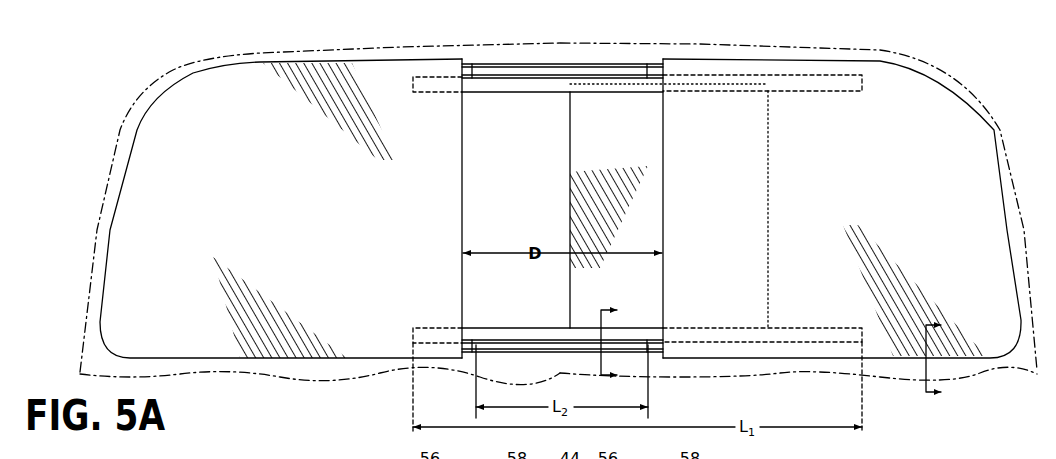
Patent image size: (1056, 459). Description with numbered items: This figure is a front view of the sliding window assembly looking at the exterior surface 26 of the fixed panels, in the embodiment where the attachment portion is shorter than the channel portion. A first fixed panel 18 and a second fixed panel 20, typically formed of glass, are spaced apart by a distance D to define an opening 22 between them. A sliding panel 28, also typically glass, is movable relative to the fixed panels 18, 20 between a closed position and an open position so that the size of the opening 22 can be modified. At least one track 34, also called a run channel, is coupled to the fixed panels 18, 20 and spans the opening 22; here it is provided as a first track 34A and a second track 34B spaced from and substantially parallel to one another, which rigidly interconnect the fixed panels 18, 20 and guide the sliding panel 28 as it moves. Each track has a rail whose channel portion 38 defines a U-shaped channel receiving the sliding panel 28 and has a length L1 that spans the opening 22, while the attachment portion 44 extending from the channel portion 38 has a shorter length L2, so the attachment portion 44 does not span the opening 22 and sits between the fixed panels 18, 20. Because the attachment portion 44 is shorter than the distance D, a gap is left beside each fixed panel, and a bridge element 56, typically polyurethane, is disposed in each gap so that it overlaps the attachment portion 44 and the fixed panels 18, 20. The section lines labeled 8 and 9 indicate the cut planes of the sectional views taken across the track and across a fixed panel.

The first fixed panel 18 is at (186, 97).
The second fixed panel 20 is at (955, 115).
The opening 22 is at (463, 104).
The exterior surface 26 is at (265, 217).
The sliding panel 28 is at (582, 163).
The track 34 is at (544, 58).
The first track 34A is at (515, 320).
The second track 34B is at (505, 100).
The channel portion 38 is at (530, 80).
The attachment portion 44 is at (593, 68).
The bridge element 56 is at (472, 65).
The section line 8- 8 is at (616, 343).
The section line 9- 9 is at (940, 356).